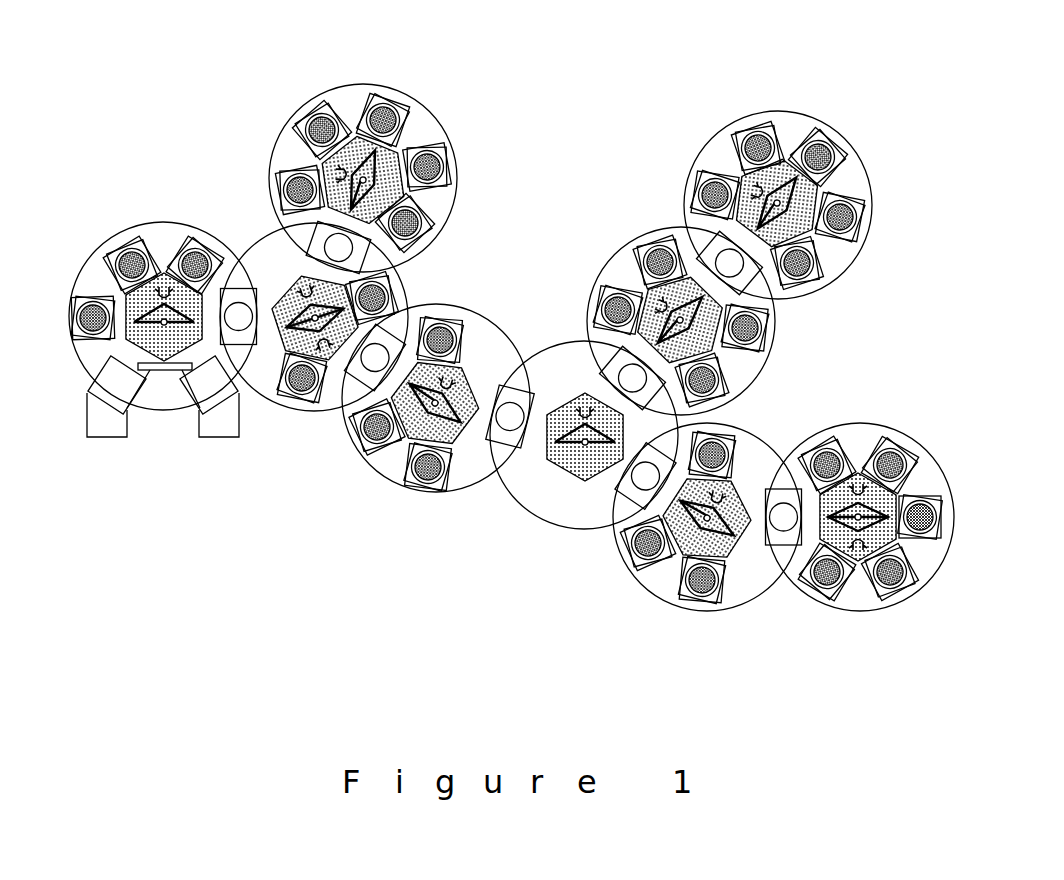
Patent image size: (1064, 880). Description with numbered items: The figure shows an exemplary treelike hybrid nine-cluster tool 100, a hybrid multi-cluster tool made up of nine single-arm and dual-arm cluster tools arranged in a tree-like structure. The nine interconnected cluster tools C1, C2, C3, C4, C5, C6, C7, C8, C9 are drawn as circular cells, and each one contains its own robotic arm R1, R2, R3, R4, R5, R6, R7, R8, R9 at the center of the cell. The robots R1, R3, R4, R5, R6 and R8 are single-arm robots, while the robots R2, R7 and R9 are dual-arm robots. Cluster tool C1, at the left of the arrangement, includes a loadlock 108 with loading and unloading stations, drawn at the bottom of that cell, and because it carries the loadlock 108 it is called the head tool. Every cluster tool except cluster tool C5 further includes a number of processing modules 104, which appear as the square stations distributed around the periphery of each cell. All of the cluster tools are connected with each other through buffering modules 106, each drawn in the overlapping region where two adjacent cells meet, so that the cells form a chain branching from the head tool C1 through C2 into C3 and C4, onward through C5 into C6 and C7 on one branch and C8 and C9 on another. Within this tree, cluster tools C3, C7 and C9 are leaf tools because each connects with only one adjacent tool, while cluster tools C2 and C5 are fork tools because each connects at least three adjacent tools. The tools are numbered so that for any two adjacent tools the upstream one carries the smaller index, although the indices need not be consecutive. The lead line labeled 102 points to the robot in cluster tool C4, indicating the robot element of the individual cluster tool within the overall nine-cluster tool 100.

The treelike hybrid 9-cluster tool 100 is at (912, 70).
The robot 102 is at (438, 457).
The processing module 104 is at (413, 489).
The buffering module 106 is at (625, 505).
The loadlock 108 is at (197, 404).
The cluster tool C1 is at (163, 333).
The cluster tool C2 is at (314, 303).
The cluster tool C3 is at (401, 178).
The cluster tool C4 is at (396, 438).
The cluster tool C5 is at (584, 413).
The cluster tool C6 is at (681, 307).
The cluster tool C7 is at (750, 205).
The cluster tool C8 is at (708, 495).
The cluster tool C9 is at (860, 494).
The robotic arm R1 is at (164, 317).
The robotic arm R2 is at (315, 317).
The robotic arm R3 is at (363, 180).
The robotic arm R4 is at (435, 403).
The robotic arm R5 is at (585, 437).
The robotic arm R6 is at (679, 320).
The robotic arm R7 is at (776, 203).
The robotic arm R8 is at (707, 517).
The robotic arm R9 is at (858, 517).